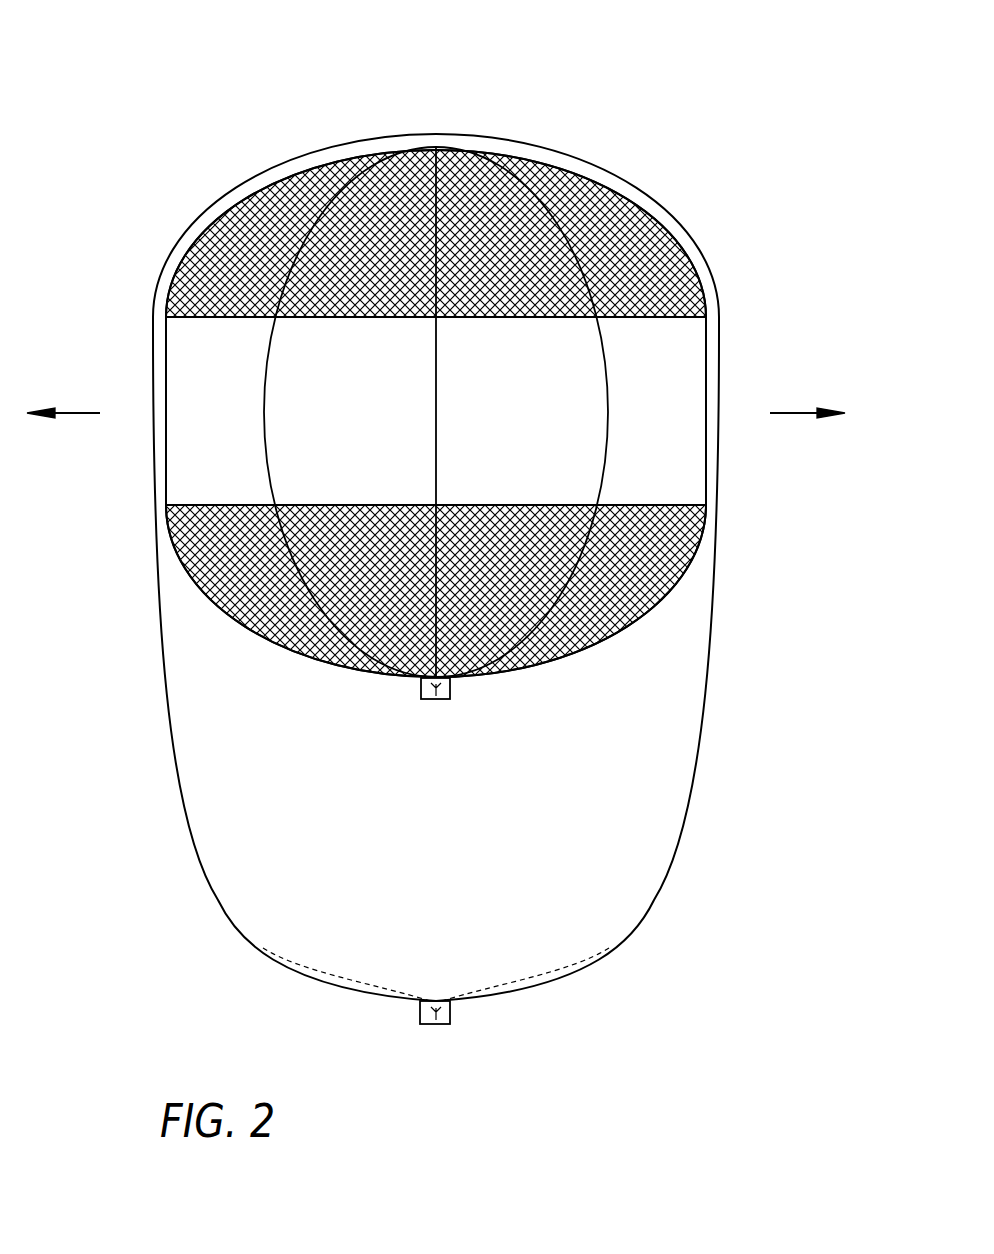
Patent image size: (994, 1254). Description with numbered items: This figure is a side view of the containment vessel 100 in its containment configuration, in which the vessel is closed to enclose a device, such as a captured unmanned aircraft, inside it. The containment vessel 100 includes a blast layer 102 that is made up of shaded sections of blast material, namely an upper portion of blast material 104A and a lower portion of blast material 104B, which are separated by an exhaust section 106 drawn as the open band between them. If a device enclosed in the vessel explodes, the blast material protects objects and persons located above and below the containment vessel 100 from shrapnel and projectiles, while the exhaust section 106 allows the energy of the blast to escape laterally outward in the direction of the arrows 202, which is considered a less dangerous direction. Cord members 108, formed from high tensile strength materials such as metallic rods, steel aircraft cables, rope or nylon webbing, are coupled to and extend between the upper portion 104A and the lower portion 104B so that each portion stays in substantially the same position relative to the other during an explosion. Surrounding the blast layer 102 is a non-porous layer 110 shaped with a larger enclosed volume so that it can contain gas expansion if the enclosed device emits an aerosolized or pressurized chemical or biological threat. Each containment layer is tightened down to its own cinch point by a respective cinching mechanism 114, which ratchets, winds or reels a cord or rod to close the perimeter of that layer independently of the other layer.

The containment vessel 100 is at (233, 102).
The blast layer 102 is at (616, 191).
The upper portion of blast material 104A is at (655, 261).
The lower portion of blast material 104B is at (627, 592).
The exhaust section 106 is at (677, 472).
The cord members 108 is at (327, 617).
The non-porous layer 110 is at (242, 187).
The cinching mechanism 114 is at (458, 692).
The arrows 202 is at (64, 413).